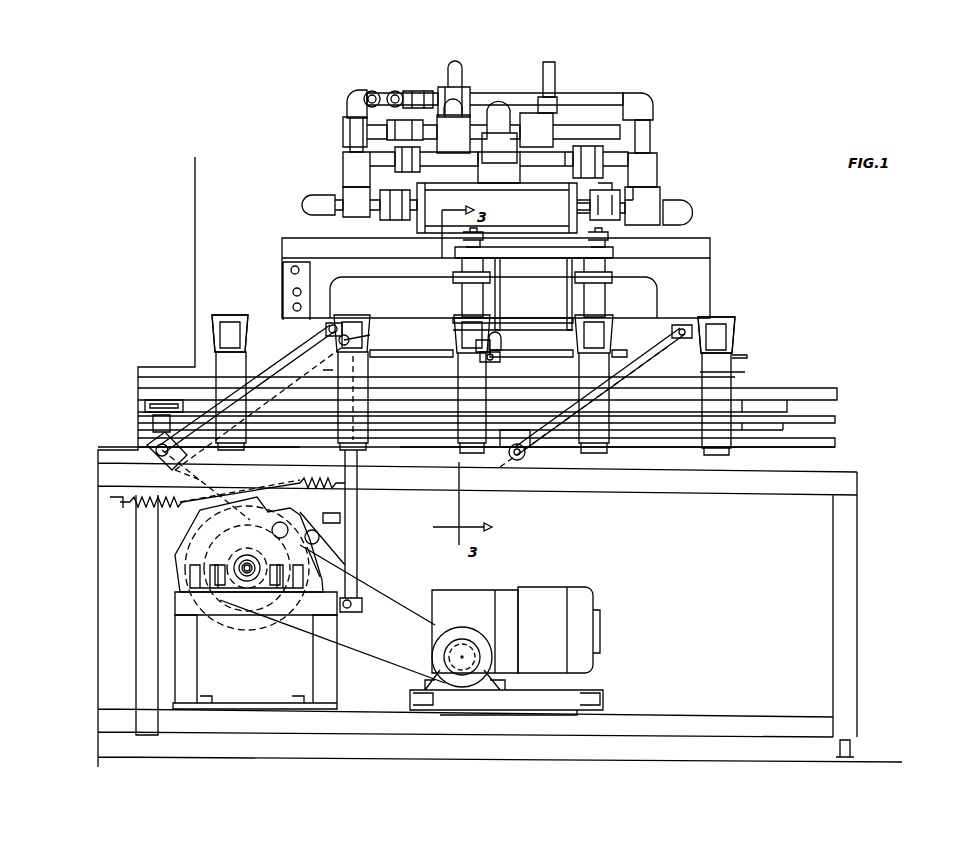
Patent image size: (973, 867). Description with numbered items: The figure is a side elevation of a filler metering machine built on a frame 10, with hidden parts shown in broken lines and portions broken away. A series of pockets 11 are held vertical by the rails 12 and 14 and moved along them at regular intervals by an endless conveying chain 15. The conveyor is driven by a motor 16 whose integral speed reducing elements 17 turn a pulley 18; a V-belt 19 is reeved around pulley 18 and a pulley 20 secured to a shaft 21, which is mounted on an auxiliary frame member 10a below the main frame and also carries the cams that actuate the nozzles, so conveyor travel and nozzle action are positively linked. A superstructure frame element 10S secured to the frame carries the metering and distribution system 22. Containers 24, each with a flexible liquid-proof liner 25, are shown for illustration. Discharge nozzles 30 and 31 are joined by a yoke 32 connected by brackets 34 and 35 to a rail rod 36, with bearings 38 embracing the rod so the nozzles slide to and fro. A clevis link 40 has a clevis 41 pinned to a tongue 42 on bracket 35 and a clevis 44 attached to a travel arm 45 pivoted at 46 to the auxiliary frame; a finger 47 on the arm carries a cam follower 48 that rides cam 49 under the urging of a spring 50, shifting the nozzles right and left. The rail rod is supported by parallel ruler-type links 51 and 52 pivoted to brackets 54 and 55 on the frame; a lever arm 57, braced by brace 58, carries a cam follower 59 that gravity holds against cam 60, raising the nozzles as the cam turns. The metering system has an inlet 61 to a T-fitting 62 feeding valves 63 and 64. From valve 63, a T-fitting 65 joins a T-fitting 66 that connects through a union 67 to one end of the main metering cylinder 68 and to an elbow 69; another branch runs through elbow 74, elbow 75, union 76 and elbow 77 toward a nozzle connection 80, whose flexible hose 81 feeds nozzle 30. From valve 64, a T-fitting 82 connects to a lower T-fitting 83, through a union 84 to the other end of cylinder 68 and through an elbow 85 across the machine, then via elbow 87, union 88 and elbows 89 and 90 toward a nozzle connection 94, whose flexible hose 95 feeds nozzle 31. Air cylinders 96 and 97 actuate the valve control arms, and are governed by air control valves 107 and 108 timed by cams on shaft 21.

The frame 10 is at (790, 387).
The auxiliary frame member 10a is at (330, 680).
The super structure frame element 10S is at (712, 243).
The pockets 11 is at (333, 372).
The rail 12 is at (838, 389).
The rail 14 is at (838, 445).
The endless conveying chain 15 is at (838, 419).
The motor 16 is at (560, 590).
The speed reducing elements 17 is at (458, 598).
The pulley 18 is at (462, 662).
The V-belt 19 is at (380, 592).
The pulley 20 is at (222, 625).
The shaft 21 is at (250, 585).
The metering and distribution system 22 is at (693, 114).
The containers 24 is at (226, 365).
The flexible liquid-proof liner 25 is at (228, 312).
The discharge nozzle 30 is at (605, 295).
The discharge nozzle 31 is at (462, 297).
The yoke 32 is at (517, 260).
The bracket 34 is at (567, 290).
The bracket 35 is at (501, 286).
The rail rod 36 is at (640, 333).
The bearing 38 is at (493, 333).
The clevis link 40 is at (399, 351).
The clevis 41 is at (500, 364).
The tongue 42 is at (502, 345).
The clevis 44 is at (355, 325).
The travel arm 45 is at (357, 507).
The pivot 46 is at (352, 610).
The finger 47 is at (340, 522).
The cam follower 48 is at (316, 530).
The cam 49 is at (313, 565).
The spring 50 is at (128, 505).
The parallel ruler-type link 51 is at (300, 347).
The parallel ruler-type link 52 is at (650, 360).
The bracket 54 is at (510, 440).
The bracket 55 is at (150, 420).
The lever arm 57 is at (155, 450).
The brace 58 is at (190, 462).
The cam follower 59 is at (284, 523).
The cam 60 is at (192, 527).
The inlet 61 is at (497, 110).
The T-fitting 62 is at (505, 176).
The valve 63 is at (397, 158).
The valve 64 is at (598, 165).
The T-fitting 65 is at (343, 168).
The T-fitting 66 is at (350, 215).
The union 67 is at (385, 218).
The main metering cylinder 68 is at (562, 217).
The elbow 69 is at (300, 207).
The elbow 74 is at (345, 130).
The elbow 75 is at (403, 126).
The union 76 is at (554, 130).
The elbow 77 is at (655, 138).
The nozzle connection 80 is at (558, 97).
The flexible hose 81 is at (553, 65).
The T-fitting 82 is at (657, 165).
The T-fitting 83 is at (640, 220).
The union 84 is at (605, 200).
The elbow 85 is at (690, 207).
The elbow 87 is at (648, 95).
The union 88 is at (470, 87).
The elbow 89 is at (395, 89).
The elbow 90 is at (357, 92).
The nozzle connection 94 is at (432, 93).
The flexible hose 95 is at (457, 63).
The air cylinder 96 is at (560, 158).
The air cylinder 97 is at (463, 150).
The air control valve 107 is at (221, 557).
The air control valve 108 is at (262, 557).